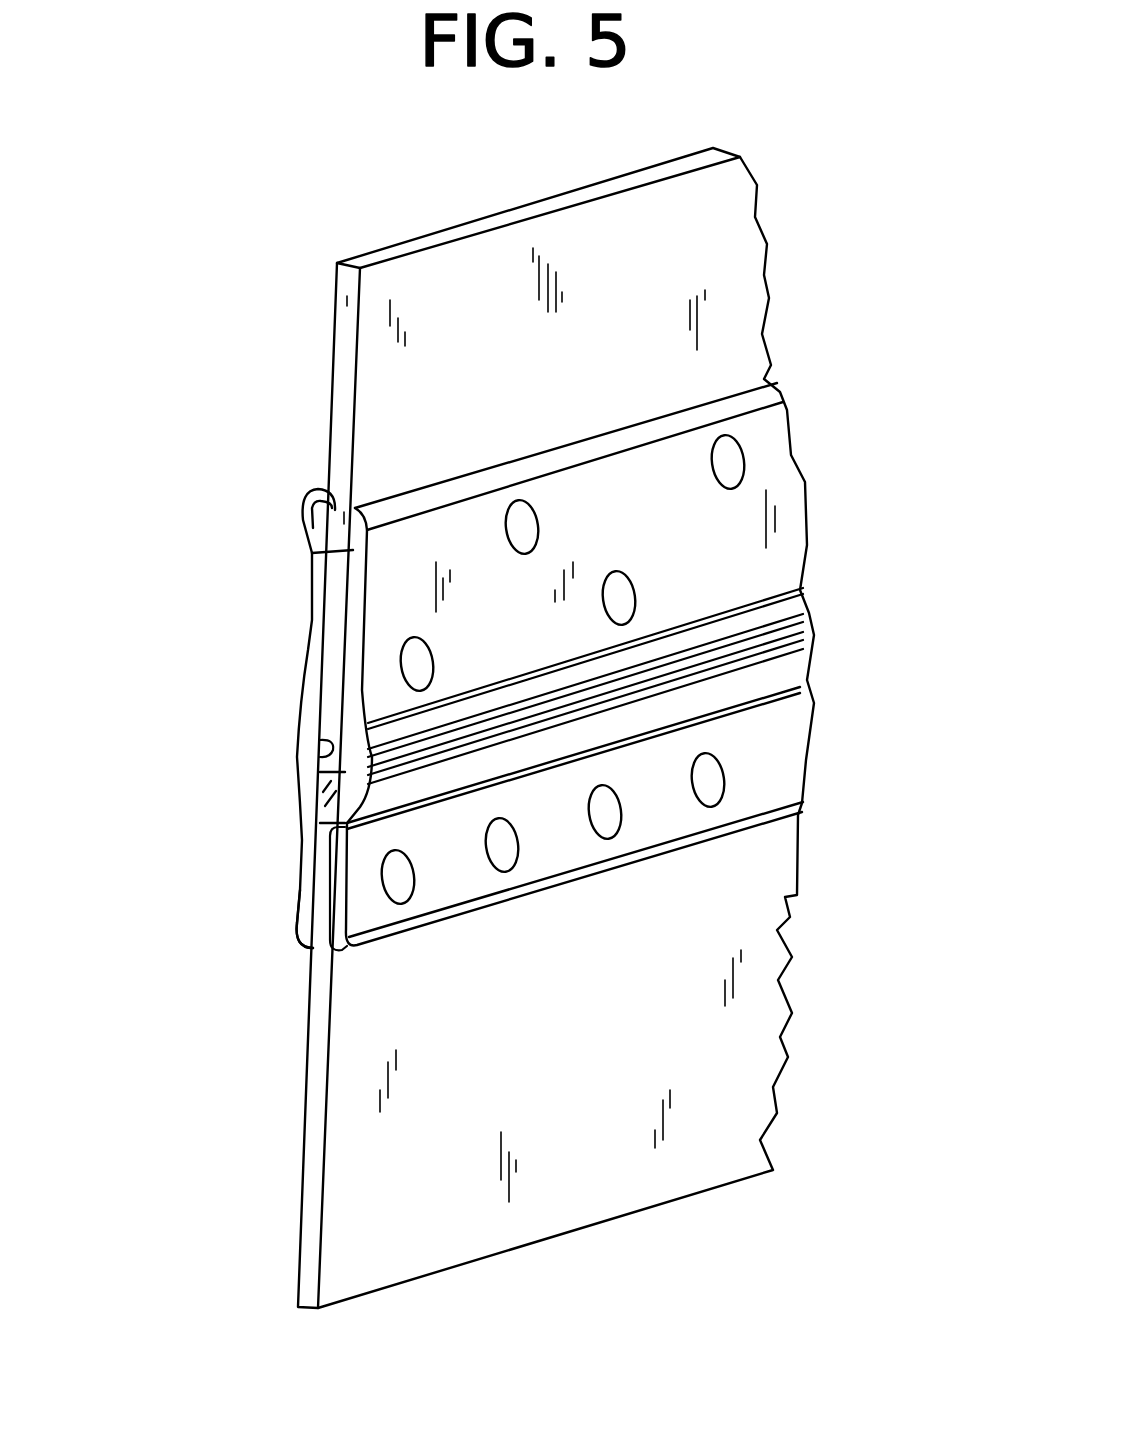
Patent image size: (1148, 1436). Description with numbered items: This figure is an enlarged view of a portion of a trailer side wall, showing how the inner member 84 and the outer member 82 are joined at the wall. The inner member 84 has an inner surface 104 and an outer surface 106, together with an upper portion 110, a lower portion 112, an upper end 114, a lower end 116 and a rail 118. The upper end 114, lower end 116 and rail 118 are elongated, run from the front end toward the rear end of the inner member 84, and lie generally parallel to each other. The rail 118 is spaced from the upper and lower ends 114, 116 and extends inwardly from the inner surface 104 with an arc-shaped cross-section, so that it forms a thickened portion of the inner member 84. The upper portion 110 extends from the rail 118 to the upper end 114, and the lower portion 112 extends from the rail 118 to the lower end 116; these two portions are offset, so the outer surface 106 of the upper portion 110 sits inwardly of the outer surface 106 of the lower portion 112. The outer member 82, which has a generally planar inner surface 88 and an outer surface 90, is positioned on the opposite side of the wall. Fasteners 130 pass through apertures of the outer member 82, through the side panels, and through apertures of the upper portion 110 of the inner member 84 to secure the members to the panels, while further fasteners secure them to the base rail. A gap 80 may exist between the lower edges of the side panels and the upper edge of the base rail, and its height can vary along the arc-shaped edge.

The gap 80 is at (316, 818).
The outer member 82 is at (298, 682).
The inner member 84 is at (453, 525).
The inner surface 88 is at (318, 752).
The outer surface 90 is at (300, 864).
The inner surface 104 is at (645, 547).
The outer surface 106 is at (312, 553).
The upper portion 110 is at (614, 474).
The lower portion 112 is at (545, 855).
The upper end 114 is at (408, 513).
The lower end 116 is at (455, 905).
The rail 118 is at (617, 677).
The fasteners 130 is at (602, 618).